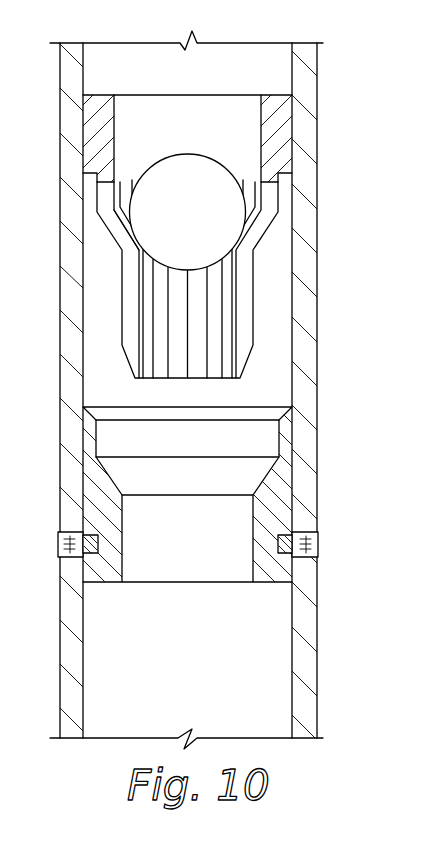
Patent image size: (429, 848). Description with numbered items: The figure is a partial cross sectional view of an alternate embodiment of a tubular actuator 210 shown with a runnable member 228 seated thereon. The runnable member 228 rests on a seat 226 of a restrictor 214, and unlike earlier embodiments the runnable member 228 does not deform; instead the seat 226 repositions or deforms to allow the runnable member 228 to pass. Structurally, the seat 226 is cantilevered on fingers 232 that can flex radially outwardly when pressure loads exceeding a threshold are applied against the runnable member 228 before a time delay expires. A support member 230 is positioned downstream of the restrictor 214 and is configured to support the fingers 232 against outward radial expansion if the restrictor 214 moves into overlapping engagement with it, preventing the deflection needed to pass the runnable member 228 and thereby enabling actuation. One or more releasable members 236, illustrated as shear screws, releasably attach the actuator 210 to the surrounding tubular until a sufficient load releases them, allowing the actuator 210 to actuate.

The tubular actuator 210 is at (340, 144).
The restrictor 214 is at (102, 95).
The seat 226 is at (134, 226).
The runnable member 228 is at (187, 153).
The support member 230 is at (277, 505).
The fingers 232 is at (245, 322).
The releasable members 236 is at (318, 548).